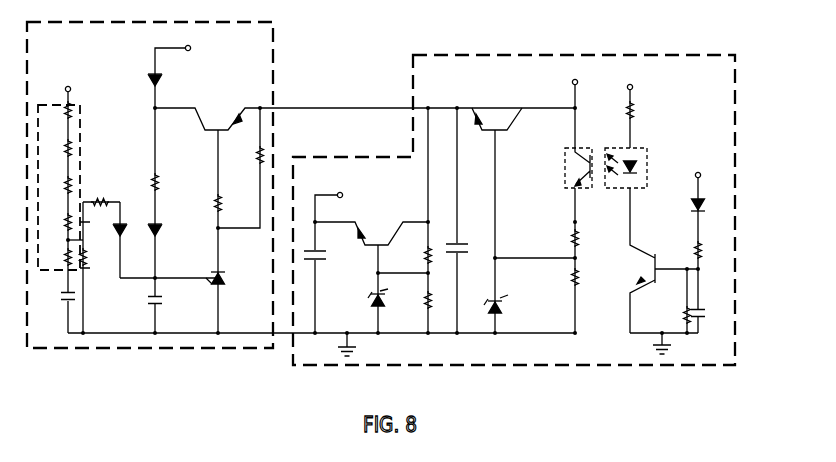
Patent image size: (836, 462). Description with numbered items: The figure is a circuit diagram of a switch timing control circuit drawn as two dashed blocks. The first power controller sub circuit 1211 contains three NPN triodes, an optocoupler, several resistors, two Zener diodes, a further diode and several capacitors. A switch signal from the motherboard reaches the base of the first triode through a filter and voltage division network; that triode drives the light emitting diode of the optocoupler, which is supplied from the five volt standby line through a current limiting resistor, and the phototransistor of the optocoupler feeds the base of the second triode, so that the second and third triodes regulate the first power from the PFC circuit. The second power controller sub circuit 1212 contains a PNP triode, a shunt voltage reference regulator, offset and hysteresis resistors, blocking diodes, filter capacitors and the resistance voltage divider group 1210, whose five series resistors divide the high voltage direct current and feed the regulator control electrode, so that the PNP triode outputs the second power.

The resistance voltage divider group 1210 is at (97, 127).
The first power controller sub circuit 1211 is at (583, 53).
The second power controller sub circuit 1212 is at (279, 74).